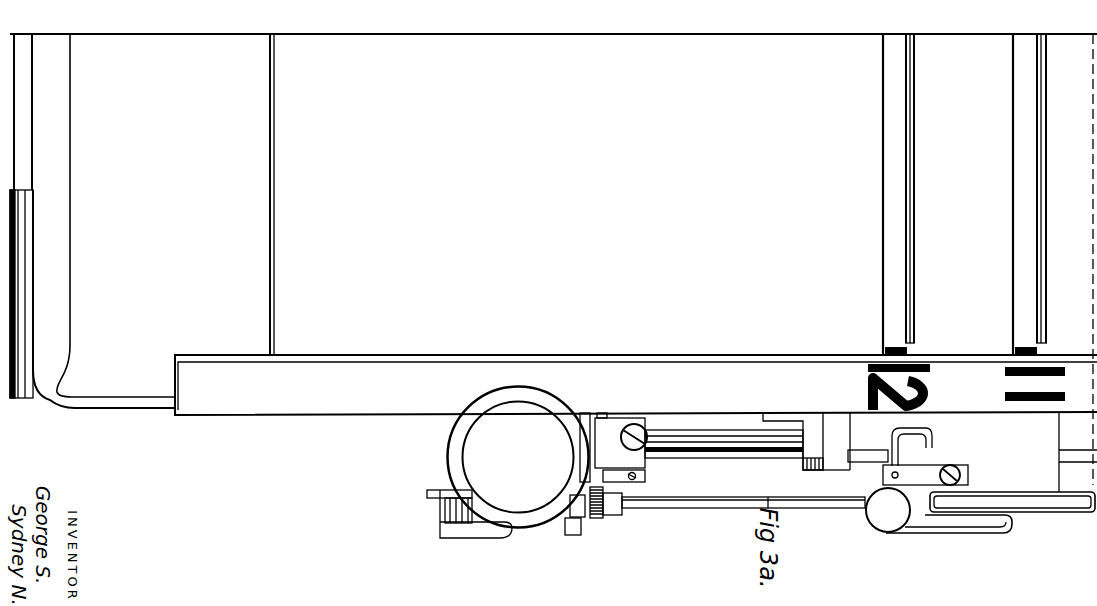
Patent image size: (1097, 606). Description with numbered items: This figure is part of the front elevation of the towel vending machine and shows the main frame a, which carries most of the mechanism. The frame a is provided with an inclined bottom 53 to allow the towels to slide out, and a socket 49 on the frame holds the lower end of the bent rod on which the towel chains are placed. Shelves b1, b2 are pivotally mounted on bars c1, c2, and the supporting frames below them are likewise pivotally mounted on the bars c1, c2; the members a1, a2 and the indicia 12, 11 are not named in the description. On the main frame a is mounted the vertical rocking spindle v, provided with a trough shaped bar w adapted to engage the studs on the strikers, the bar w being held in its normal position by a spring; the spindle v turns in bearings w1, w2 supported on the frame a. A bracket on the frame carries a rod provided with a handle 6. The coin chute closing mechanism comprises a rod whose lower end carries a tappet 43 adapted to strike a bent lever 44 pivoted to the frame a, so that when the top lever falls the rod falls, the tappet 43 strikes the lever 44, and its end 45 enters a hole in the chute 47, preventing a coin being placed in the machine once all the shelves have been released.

The inclined bottom 53 is at (153, 221).
The socket 49 is at (34, 388).
The main frame a is at (400, 392).
The indicia 12 is at (899, 387).
The indicia 11 is at (1035, 384).
The vertical member a1 is at (884, 143).
The shelf b1 is at (916, 200).
The bar c1 is at (888, 353).
The vertical member a2 is at (1013, 135).
The shelf b2 is at (1047, 200).
The bar c2 is at (1016, 353).
The handle 6 is at (518, 488).
The bearing w1 is at (622, 455).
The vertical rocking spindle v is at (722, 445).
The bearing w2 is at (812, 462).
The trough shaped bar w is at (875, 418).
The tappet 43 is at (927, 432).
The bent lever 44 is at (912, 433).
The end of lever 45 is at (1010, 519).
The chute 47 is at (1052, 512).